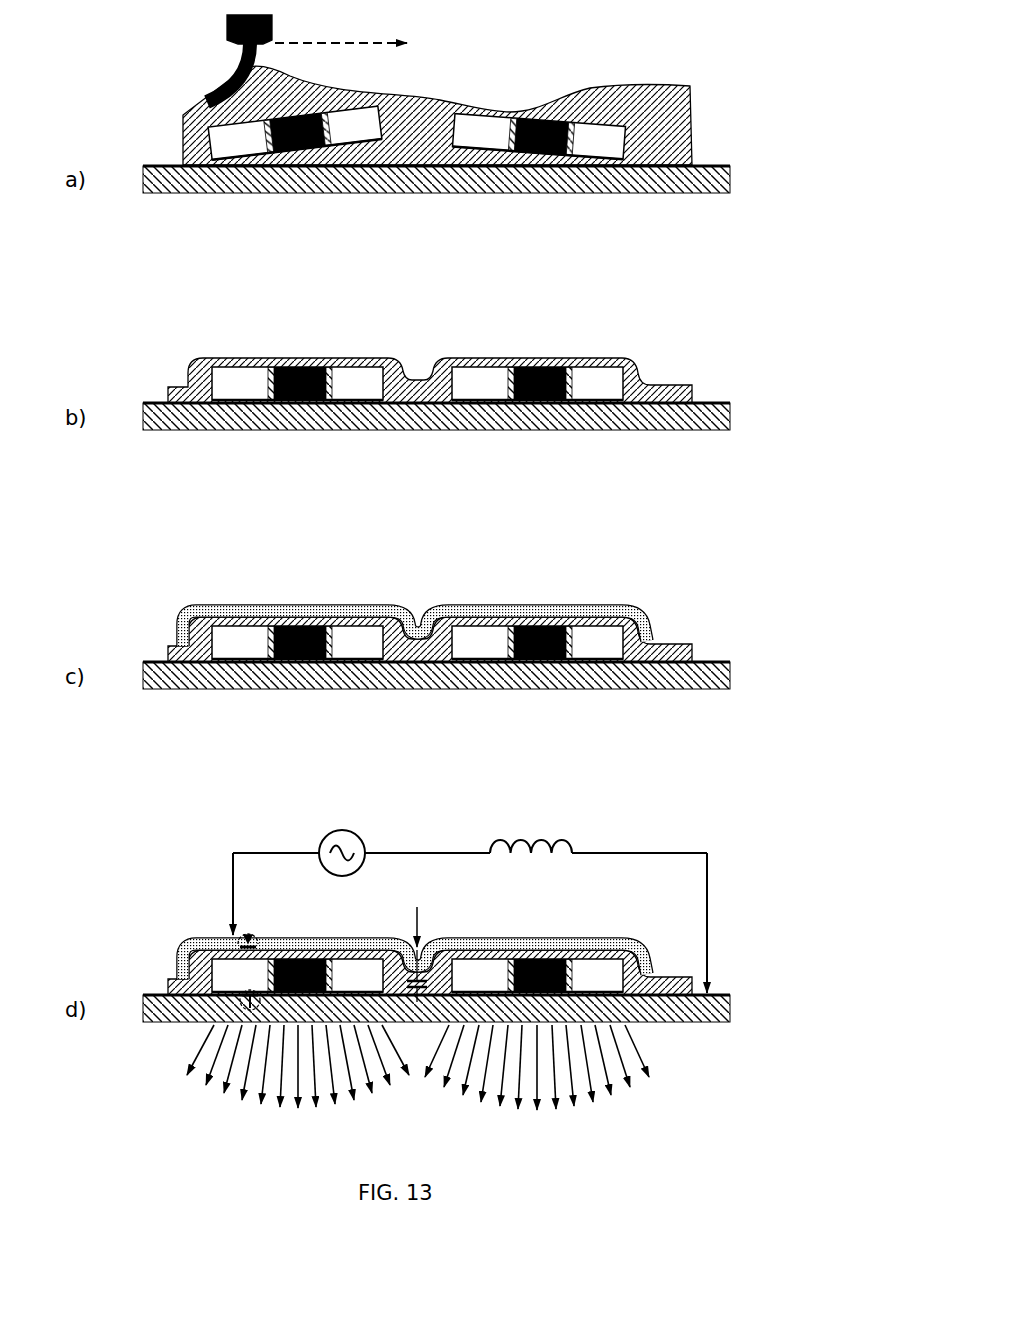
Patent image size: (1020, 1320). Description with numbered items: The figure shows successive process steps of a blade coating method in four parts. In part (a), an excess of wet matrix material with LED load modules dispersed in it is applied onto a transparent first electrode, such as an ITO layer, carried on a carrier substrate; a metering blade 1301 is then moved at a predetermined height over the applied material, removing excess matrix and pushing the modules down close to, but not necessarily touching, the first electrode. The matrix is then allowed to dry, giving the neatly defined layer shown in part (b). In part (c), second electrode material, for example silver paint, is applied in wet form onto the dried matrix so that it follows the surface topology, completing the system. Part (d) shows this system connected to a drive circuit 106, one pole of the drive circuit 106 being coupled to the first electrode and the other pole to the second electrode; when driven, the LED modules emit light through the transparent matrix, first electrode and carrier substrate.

The drive circuit 106 is at (630, 850).
The metering blade 1301 is at (231, 76).